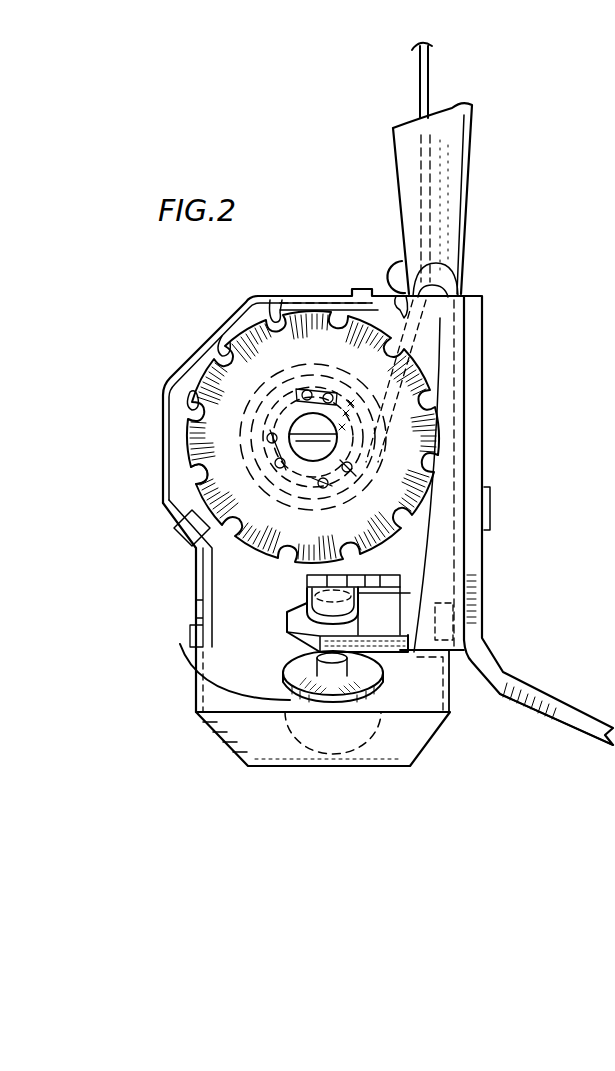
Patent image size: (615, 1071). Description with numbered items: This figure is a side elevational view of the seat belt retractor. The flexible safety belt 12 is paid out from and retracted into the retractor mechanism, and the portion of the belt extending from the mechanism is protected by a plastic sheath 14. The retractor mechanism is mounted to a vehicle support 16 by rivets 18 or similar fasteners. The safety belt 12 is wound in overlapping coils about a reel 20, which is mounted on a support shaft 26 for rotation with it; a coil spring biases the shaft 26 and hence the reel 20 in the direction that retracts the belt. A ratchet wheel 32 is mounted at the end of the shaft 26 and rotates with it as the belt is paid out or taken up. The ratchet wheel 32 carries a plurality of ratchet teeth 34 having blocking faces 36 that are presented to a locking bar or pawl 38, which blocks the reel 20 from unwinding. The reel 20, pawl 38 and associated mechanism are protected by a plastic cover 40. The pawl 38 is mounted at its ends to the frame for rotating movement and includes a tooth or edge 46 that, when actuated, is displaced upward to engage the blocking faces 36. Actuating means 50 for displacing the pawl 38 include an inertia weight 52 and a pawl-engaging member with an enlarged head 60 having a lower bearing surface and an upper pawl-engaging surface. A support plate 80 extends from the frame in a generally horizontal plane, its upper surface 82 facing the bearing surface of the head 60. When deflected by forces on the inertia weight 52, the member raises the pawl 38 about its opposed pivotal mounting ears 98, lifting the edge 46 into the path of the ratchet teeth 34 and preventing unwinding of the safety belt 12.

The safety belt 12 is at (428, 72).
The plastic sheath 14 is at (470, 135).
The vehicle support 16 is at (540, 694).
The rivets 18 is at (491, 510).
The reel 20 is at (349, 399).
The support shaft 26 is at (322, 440).
The ratchet wheel 32 is at (326, 357).
The ratchet teeth 34 is at (212, 400).
The blocking faces 36 is at (279, 298).
The locking bar or pawl 38 is at (378, 575).
The plastic cover 40 is at (177, 382).
The tooth or edge 46 is at (306, 580).
The actuating means 50 is at (285, 657).
The inertia weight 52 is at (410, 752).
The enlarged head 60 is at (300, 597).
The support plate 80 is at (280, 630).
The upper surface 82 is at (390, 640).
The pivotal mounting ears 98 is at (377, 588).